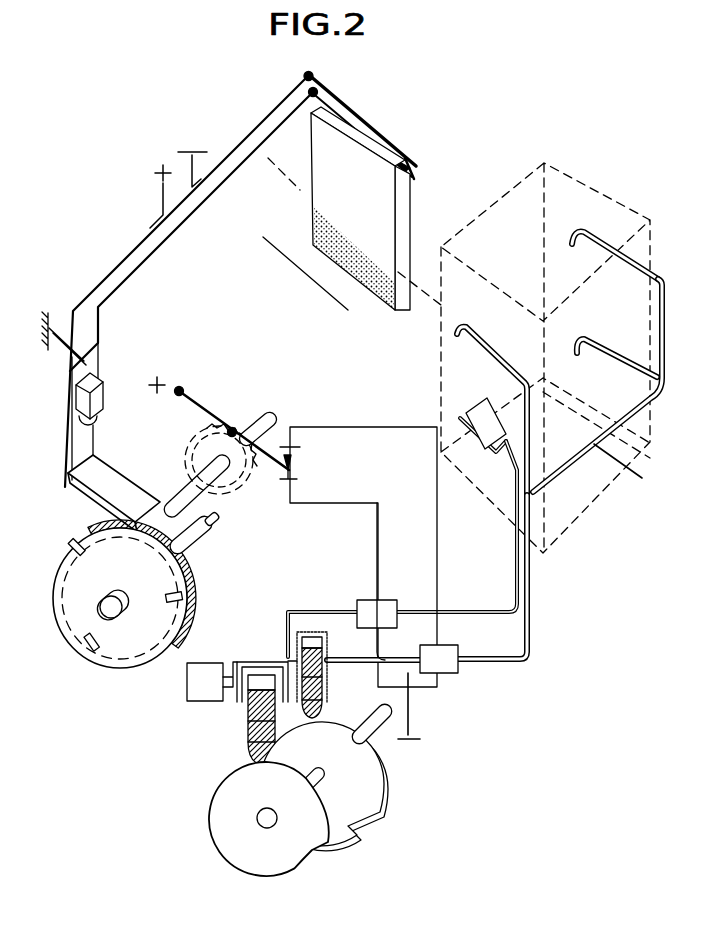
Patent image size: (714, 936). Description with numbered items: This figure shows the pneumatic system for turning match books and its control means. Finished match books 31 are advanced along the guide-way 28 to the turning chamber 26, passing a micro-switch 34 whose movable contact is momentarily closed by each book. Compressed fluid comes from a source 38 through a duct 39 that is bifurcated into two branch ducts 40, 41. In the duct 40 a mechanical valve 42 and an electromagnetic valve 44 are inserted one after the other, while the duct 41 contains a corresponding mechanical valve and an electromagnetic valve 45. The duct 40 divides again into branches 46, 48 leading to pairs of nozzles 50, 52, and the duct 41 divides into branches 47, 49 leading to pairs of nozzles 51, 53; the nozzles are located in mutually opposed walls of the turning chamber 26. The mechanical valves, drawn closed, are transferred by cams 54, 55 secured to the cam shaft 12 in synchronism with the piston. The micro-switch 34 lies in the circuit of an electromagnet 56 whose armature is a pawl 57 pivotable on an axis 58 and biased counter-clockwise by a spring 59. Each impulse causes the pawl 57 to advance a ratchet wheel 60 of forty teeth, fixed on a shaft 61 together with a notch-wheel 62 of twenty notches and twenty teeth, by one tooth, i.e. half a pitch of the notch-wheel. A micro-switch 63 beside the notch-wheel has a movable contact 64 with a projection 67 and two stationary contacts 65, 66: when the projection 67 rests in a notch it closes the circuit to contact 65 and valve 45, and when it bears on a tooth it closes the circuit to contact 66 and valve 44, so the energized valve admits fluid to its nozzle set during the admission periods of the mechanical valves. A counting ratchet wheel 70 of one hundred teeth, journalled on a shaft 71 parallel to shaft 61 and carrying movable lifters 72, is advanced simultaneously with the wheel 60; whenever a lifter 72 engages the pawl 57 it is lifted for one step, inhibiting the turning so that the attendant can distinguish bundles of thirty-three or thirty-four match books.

The cam shaft 12 is at (366, 724).
The turning chamber 26 is at (615, 214).
The guide-way 28 is at (318, 266).
The match book 31 is at (322, 148).
The micro-switch 34 is at (303, 88).
The source of compressed fluid 38 is at (197, 700).
The duct 39 is at (232, 672).
The duct 40 is at (530, 630).
The duct 41 is at (515, 576).
The mechanical valve 42 is at (325, 680).
The electromagnetic valve 44 is at (392, 689).
The electromagnetic valve 45 is at (377, 612).
The branch 46 is at (531, 418).
The branch 47 is at (660, 323).
The branch 48 is at (620, 472).
The branch 49 is at (492, 444).
The nozzles 50 is at (470, 331).
The nozzles 51 is at (617, 270).
The nozzles 52 is at (622, 371).
The nozzles 53 is at (490, 398).
The cam 54 is at (372, 781).
The cam 55 is at (223, 803).
The electromagnet 56 is at (98, 385).
The pawl 57 is at (124, 488).
The axis 58 is at (98, 447).
The spring 59 is at (57, 328).
The ratchet wheel 60 is at (173, 503).
The shaft 61 is at (278, 418).
The notch-wheel 62 is at (212, 430).
The micro-switch 63 is at (232, 385).
The movable contact 64 is at (180, 388).
The stationary contact 65 is at (298, 479).
The stationary contact 66 is at (297, 449).
The projection 67 is at (234, 428).
The ratchet wheel 70 is at (198, 620).
The shaft 71 is at (215, 540).
The lifters 72 is at (70, 543).